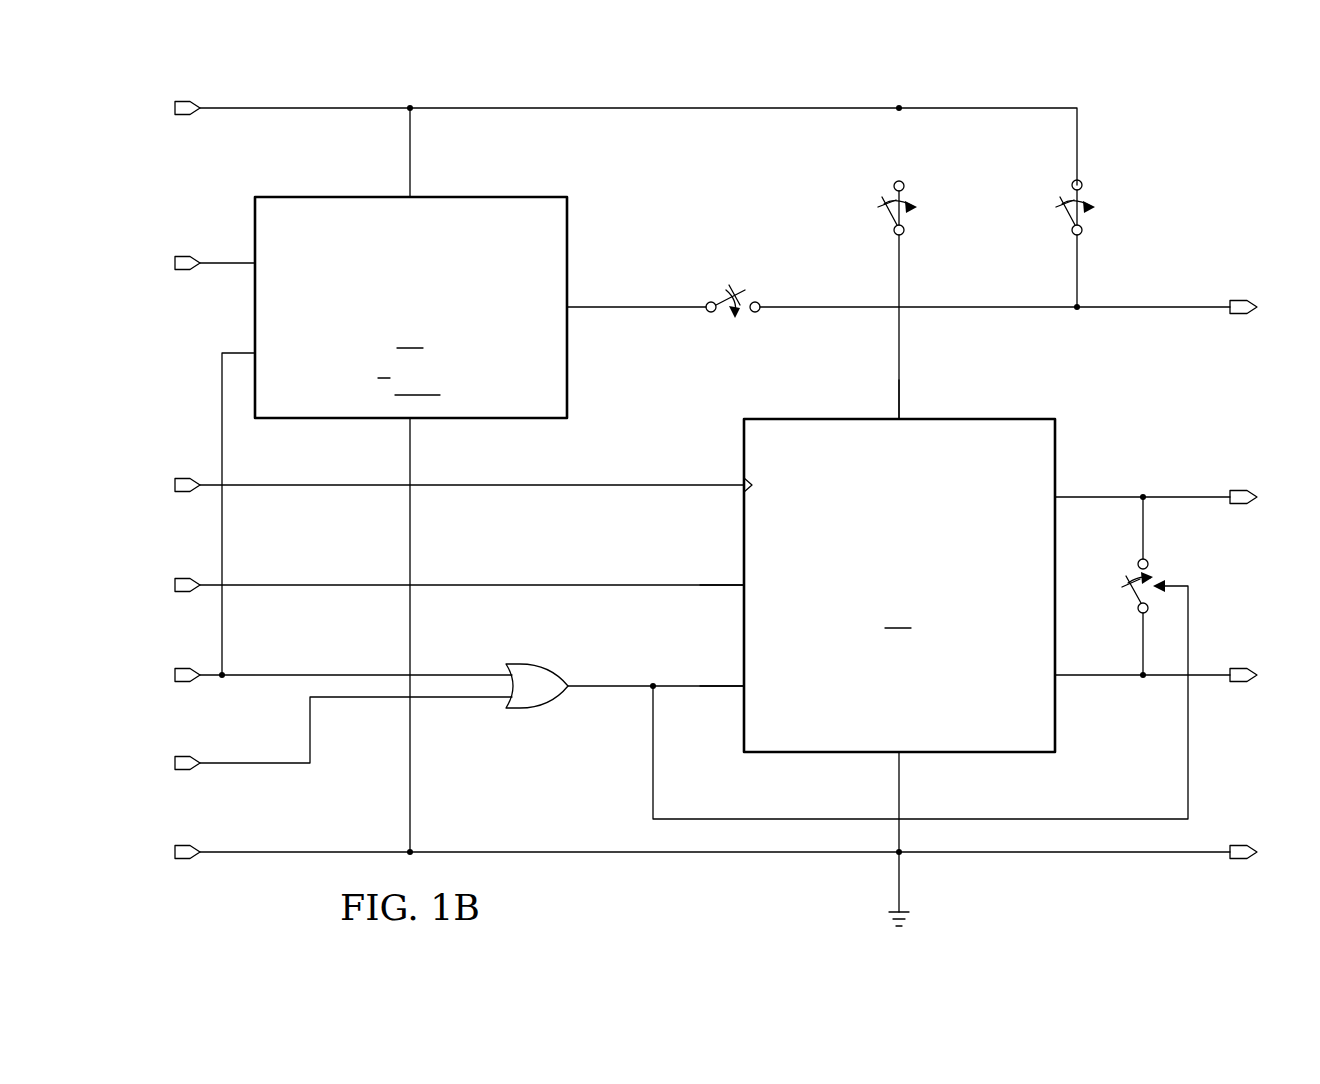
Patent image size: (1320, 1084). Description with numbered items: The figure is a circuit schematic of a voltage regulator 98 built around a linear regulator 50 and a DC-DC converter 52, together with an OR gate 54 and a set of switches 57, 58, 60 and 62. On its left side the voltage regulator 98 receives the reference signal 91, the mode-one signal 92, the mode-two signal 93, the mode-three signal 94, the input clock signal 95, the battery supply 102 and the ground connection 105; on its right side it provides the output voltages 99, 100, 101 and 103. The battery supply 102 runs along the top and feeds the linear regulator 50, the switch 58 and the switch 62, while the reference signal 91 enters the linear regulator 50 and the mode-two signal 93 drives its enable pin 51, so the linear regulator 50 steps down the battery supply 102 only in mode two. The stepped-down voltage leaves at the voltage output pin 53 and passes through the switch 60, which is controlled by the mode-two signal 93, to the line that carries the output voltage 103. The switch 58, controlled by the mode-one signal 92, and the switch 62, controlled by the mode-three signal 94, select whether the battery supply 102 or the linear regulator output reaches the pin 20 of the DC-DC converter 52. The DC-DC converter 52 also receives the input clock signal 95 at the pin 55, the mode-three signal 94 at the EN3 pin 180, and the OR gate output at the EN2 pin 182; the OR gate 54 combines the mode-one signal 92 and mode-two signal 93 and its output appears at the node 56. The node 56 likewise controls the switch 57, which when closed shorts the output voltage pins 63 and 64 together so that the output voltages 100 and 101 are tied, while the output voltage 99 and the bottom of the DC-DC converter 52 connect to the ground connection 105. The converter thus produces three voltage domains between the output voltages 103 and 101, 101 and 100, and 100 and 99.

The voltage regulator 98 is at (1240, 125).
The linear regulator 50 is at (411, 307).
The DC-DC converter 52 is at (899, 585).
The OR gate 54 is at (540, 709).
The node 56 is at (650, 692).
The switch 57 is at (1128, 602).
The switch 58 is at (884, 224).
The switch 60 is at (726, 300).
The switch 62 is at (1062, 224).
The voltage output pin 53 is at (579, 318).
The pin 55 is at (738, 480).
The output voltage pin 63 is at (1060, 682).
The output voltage pin 64 is at (1062, 492).
The reference signal 91 is at (182, 255).
The mode 1 signal 92 is at (183, 774).
The mode 2 signal 93 is at (183, 686).
The mode 3 signal 94 is at (183, 596).
The input clock signal 95 is at (186, 478).
The output voltage 99 is at (1240, 861).
The output voltage 100 is at (1240, 684).
The output voltage 101 is at (1240, 488).
The output voltage 103 is at (1240, 298).
The battery supply 102 is at (185, 100).
The ground connection 105 is at (178, 862).
The pin 20 is at (904, 414).
The enable pin 51 is at (248, 351).
The EN3 pin 180 is at (737, 592).
The EN2 pin 182 is at (737, 693).